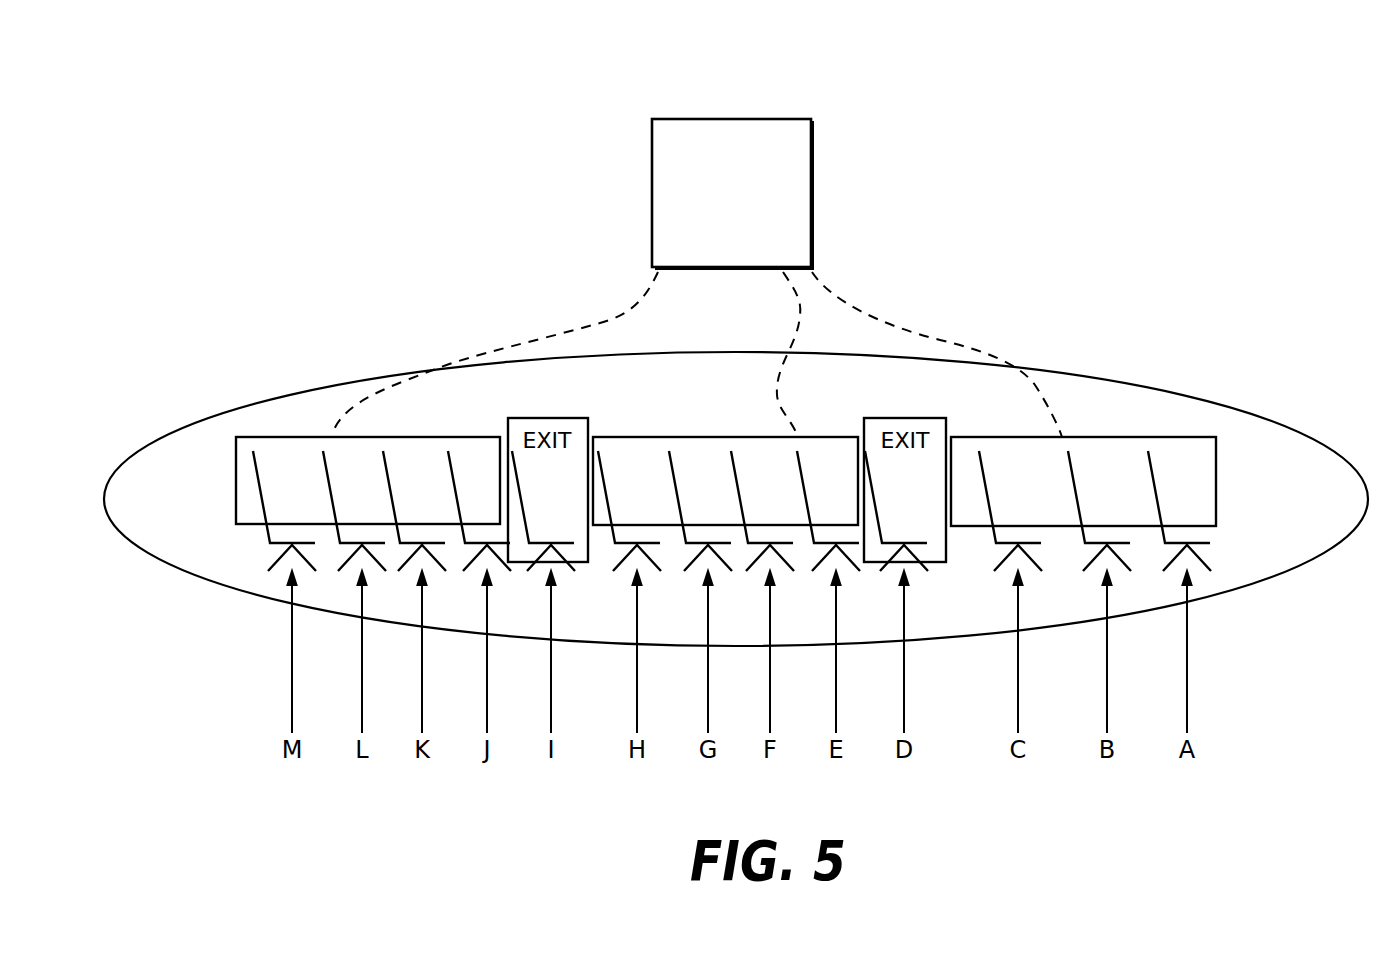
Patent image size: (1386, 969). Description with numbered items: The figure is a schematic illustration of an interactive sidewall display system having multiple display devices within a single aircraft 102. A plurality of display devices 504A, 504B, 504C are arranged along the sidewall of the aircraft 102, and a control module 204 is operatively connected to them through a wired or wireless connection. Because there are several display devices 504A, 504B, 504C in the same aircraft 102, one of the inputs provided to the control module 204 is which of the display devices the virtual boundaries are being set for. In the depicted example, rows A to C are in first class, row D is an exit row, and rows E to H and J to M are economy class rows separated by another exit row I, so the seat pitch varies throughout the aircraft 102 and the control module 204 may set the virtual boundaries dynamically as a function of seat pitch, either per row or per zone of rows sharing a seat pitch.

The aircraft 102 is at (1178, 397).
The control module 204 is at (686, 118).
The display device 504A is at (1217, 490).
The display device 504B is at (630, 437).
The display device 504C is at (395, 437).